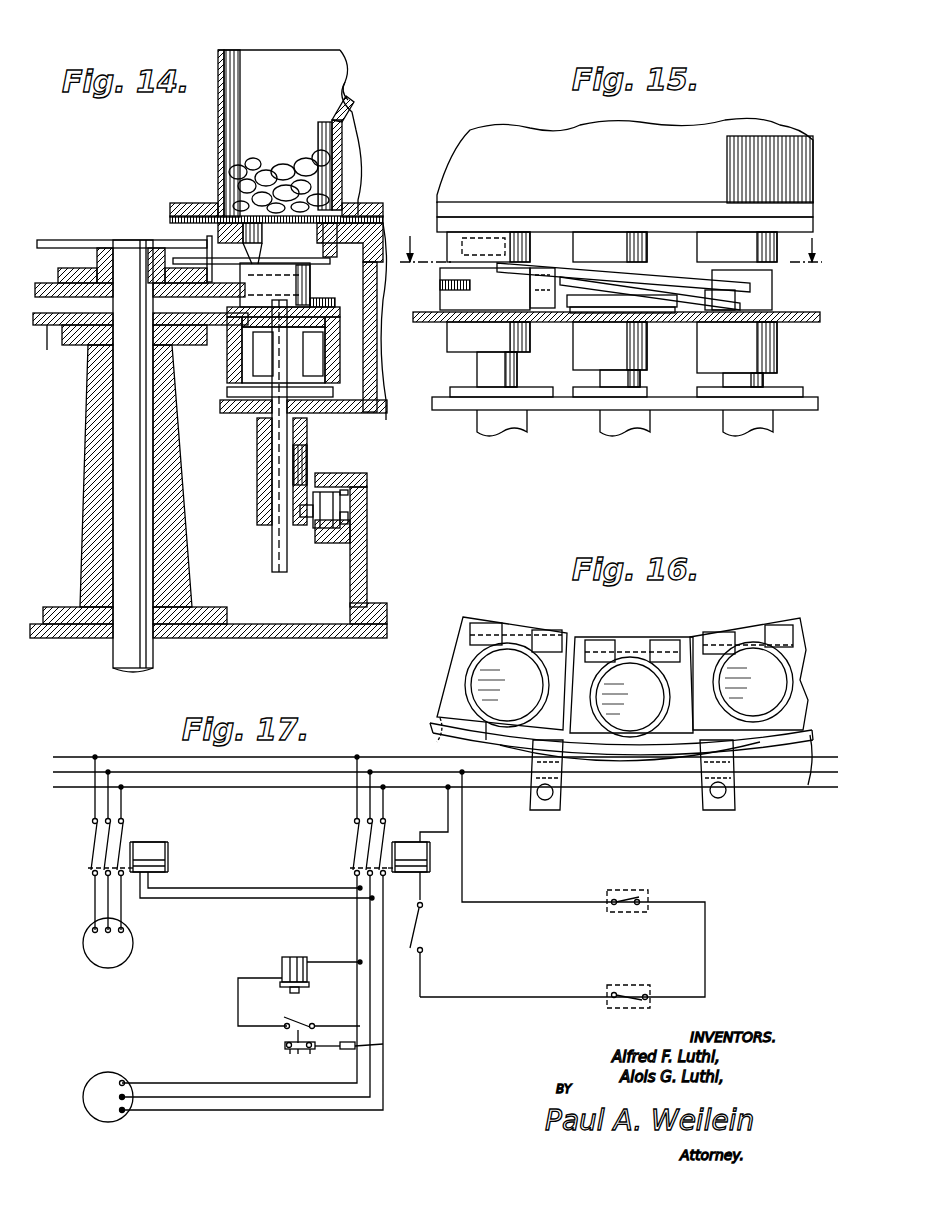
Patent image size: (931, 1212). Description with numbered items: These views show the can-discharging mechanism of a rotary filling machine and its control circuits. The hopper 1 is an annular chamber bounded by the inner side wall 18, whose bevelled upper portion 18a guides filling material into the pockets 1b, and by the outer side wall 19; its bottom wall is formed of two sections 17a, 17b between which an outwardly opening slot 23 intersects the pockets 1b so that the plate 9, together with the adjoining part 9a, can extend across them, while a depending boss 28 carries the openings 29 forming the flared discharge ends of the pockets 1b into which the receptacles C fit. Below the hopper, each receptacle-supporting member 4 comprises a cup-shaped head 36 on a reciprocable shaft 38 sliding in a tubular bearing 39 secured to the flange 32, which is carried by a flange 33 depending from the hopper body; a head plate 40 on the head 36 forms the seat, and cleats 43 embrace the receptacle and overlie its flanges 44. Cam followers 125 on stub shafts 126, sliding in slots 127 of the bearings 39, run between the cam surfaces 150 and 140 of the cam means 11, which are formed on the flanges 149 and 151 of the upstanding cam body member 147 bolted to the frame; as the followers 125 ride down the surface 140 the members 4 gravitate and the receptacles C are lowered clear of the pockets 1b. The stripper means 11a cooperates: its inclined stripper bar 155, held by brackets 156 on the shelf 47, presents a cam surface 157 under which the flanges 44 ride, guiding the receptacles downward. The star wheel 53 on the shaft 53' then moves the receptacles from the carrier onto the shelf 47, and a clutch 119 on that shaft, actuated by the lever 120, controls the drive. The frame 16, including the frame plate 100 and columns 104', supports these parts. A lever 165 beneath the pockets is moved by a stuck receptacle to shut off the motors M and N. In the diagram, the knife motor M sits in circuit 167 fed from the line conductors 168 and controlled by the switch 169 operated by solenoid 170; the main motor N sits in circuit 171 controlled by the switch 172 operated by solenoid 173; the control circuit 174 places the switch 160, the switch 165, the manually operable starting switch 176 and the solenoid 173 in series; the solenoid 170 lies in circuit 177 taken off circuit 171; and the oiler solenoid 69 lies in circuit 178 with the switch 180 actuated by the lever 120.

In FIG. 14, the hopper 1 is at (300, 47).
In FIG. 15, the hopper 1 is at (732, 128).
In FIG. 14, the pockets 1b is at (268, 166).
In FIG. 14, the receptacle-supporting member 4 is at (226, 372).
In FIG. 15, the receptacle-supporting member 4 is at (706, 366).
In FIG. 16, the receptacle-supporting member 4 is at (445, 666).
In FIG. 14, the plate 9 is at (300, 212).
In FIG. 15, the plate 9 is at (498, 216).
In FIG. 14, the support plate 9a is at (180, 204).
In FIG. 14, the cam means 11 is at (362, 472).
In FIG. 15, the stripper means 11a is at (632, 268).
In FIG. 15, the frame structure 16 is at (611, 264).
In FIG. 15, the upper bottom wall section 17a is at (460, 208).
In FIG. 15, the lower bottom wall section 17b is at (438, 222).
In FIG. 14, the inner side wall 18 is at (343, 135).
In FIG. 14, the bevelled upper portion 18a is at (347, 90).
In FIG. 14, the outer side wall 19 is at (218, 132).
In FIG. 15, the outer side wall 19 is at (625, 160).
In FIG. 15, the slot 23 is at (530, 216).
In FIG. 15, the boss 28 is at (575, 242).
In FIG. 14, the openings 29 is at (315, 248).
In FIG. 14, the flange 32 is at (232, 402).
In FIG. 15, the flange 32 is at (570, 405).
In FIG. 14, the flange 33 is at (378, 330).
In FIG. 14, the head 36 is at (340, 365).
In FIG. 15, the head 36 is at (616, 346).
In FIG. 14, the reciprocable shaft 38 is at (272, 462).
In FIG. 14, the tubular bearing 39 is at (305, 433).
In FIG. 15, the tubular bearing 39 is at (600, 378).
In FIG. 14, the head plate 40 is at (335, 306).
In FIG. 15, the head plate 40 is at (480, 284).
In FIG. 16, the head plate 40 is at (445, 688).
In FIG. 14, the cleats 43 is at (320, 302).
In FIG. 15, the cleats 43 is at (448, 258).
In FIG. 16, the cleats 43 is at (472, 640).
In FIG. 15, the receptacle flanges 44 is at (458, 284).
In FIG. 16, the receptacle flanges 44 is at (488, 742).
In FIG. 14, the shelf 47 is at (48, 345).
In FIG. 16, the shelf 47 is at (430, 732).
In FIG. 14, the star wheel 53 is at (140, 300).
In FIG. 14, the shaft 53' is at (98, 456).
In FIG. 17, the solenoid 69 is at (282, 963).
In FIG. 14, the frame plate 100 is at (268, 636).
In FIG. 14, the columns 104' is at (133, 484).
In FIG. 16, the clutch 119 is at (630, 755).
In FIG. 17, the operating lever 120 is at (360, 1042).
In FIG. 14, the cam followers 125 is at (330, 505).
In FIG. 14, the stub shafts 126 is at (292, 502).
In FIG. 14, the slots 127 is at (298, 480).
In FIG. 14, the cam surface 140 is at (345, 523).
In FIG. 14, the cam body member 147 is at (367, 572).
In FIG. 14, the flange 149 is at (332, 474).
In FIG. 14, the cam surface 150 is at (348, 492).
In FIG. 14, the flange 151 is at (333, 545).
In FIG. 15, the stripper bar 155 is at (688, 270).
In FIG. 16, the stripper bar 155 is at (660, 748).
In FIG. 15, the brackets 156 is at (533, 292).
In FIG. 16, the brackets 156 is at (560, 748).
In FIG. 15, the cam surface 157 is at (598, 280).
In FIG. 17, the switch 160 is at (632, 912).
In FIG. 14, the lever 165 is at (252, 245).
In FIG. 17, the lever 165 is at (633, 1008).
In FIG. 17, the circuit 167 is at (92, 808).
In FIG. 17, the line conductors 168 is at (228, 760).
In FIG. 17, the switch 169 is at (86, 866).
In FIG. 17, the solenoid 170 is at (150, 845).
In FIG. 17, the circuit 171 is at (356, 913).
In FIG. 17, the switch 172 is at (352, 843).
In FIG. 17, the solenoid 173 is at (406, 844).
In FIG. 17, the circuit 174 is at (548, 900).
In FIG. 17, the starting switch 176 is at (408, 925).
In FIG. 17, the circuit 177 is at (250, 888).
In FIG. 17, the circuit 178 is at (236, 1004).
In FIG. 17, the switch 180 is at (303, 1022).
In FIG. 14, the receptacles C is at (300, 282).
In FIG. 15, the receptacles C is at (755, 276).
In FIG. 16, the receptacles C is at (510, 648).
In FIG. 17, the motor M is at (122, 948).
In FIG. 17, the motor N is at (118, 1082).